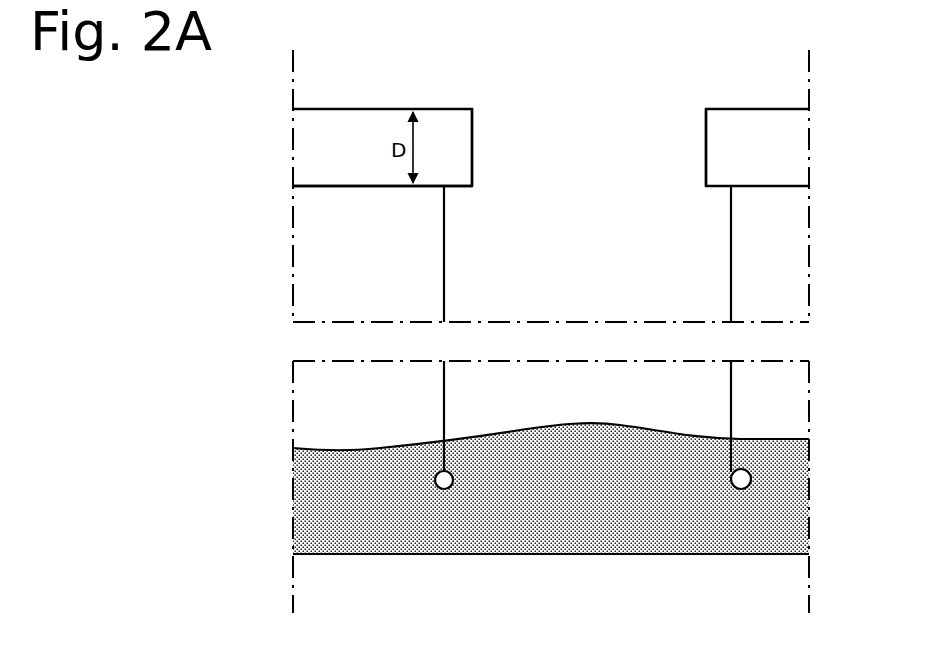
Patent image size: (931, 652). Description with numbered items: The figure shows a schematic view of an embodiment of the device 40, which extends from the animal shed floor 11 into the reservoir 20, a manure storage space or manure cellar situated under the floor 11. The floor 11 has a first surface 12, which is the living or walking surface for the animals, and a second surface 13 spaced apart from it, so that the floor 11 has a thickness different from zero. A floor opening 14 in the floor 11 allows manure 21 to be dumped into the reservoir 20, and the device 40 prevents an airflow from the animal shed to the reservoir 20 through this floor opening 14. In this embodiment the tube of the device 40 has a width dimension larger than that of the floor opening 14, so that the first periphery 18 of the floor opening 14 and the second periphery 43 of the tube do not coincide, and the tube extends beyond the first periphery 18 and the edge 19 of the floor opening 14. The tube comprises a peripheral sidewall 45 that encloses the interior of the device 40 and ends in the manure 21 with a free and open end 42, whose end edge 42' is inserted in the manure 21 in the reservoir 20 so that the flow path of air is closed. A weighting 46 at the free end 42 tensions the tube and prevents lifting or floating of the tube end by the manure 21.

The animal shed floor 11 is at (752, 135).
The first surface 12 is at (400, 109).
The second surface 13 is at (360, 186).
The floor opening 14 is at (585, 152).
The first periphery 18 is at (472, 146).
The edge of the floor opening 19 is at (706, 109).
The reservoir 20 is at (551, 402).
The manure 21 is at (551, 488).
The device 40 is at (410, 300).
The free end 42 is at (483, 416).
The end edge 42' is at (710, 425).
The second periphery 43 is at (444, 240).
The peripheral sidewall 45 is at (731, 200).
The weighting 46 is at (440, 488).